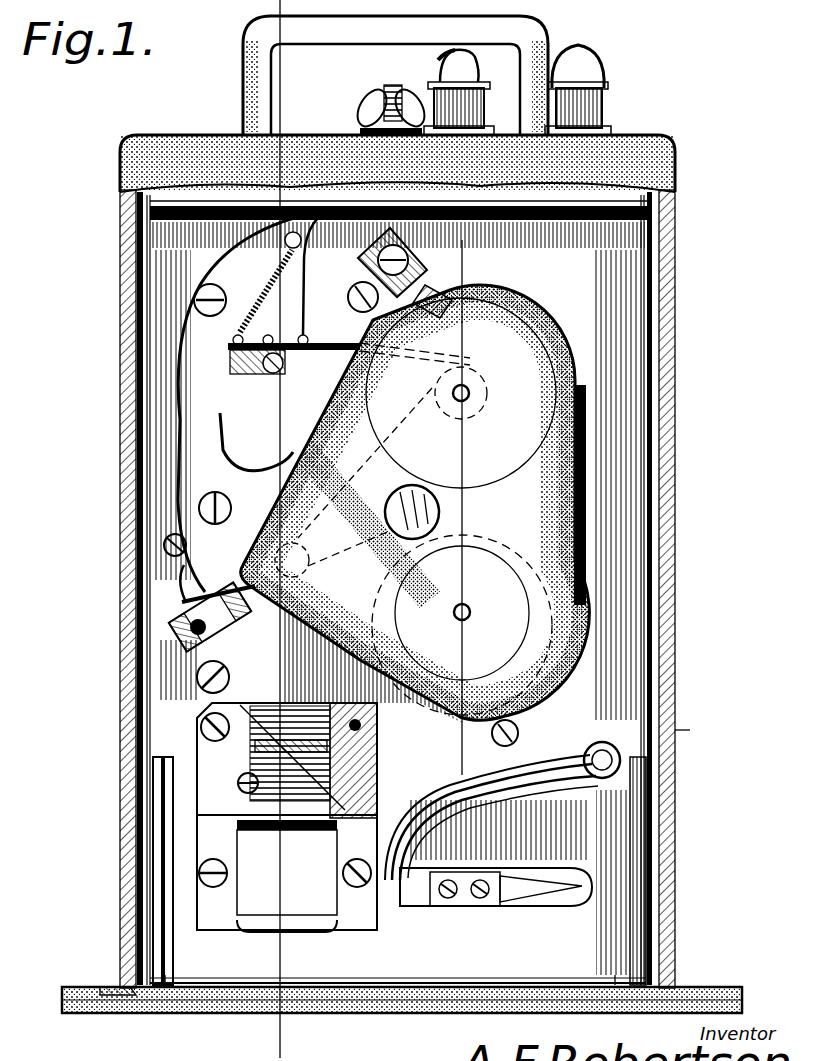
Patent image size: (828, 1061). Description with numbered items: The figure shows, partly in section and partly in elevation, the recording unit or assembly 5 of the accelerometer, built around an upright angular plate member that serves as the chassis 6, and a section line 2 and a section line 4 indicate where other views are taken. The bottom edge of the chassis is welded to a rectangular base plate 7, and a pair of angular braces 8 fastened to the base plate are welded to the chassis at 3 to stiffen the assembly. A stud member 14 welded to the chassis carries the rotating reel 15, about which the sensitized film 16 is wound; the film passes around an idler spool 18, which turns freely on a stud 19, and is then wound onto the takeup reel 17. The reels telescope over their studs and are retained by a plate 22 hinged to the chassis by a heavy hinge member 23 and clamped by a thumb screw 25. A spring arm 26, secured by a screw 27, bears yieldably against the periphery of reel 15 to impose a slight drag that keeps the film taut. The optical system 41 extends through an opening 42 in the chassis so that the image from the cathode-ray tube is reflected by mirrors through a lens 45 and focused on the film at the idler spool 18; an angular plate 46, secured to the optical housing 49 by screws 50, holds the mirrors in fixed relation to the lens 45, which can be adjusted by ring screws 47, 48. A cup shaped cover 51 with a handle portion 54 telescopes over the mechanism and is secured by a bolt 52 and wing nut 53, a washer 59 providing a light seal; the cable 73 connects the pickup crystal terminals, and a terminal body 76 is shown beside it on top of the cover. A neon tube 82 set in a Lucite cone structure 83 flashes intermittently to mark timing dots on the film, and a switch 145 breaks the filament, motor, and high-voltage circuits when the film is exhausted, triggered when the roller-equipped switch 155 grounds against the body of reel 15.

The section line 2- 2 is at (326, 12).
The welded connection 3 is at (616, 770).
The screws 4 is at (512, 248).
The recording unit or assembly 5 is at (680, 408).
The upright angular plate member (chassis) 6 is at (570, 276).
The base plate 7 is at (723, 988).
The angular braces 8 is at (150, 960).
The stud member 14 is at (472, 394).
The reel 15 is at (520, 462).
The sensitized film 16 is at (330, 572).
The takeup reel 17 is at (375, 612).
The idler spool 18 is at (302, 548).
The stud 19 is at (472, 612).
The plate 22 is at (506, 516).
The hinge member 23 is at (584, 600).
The thumb screw 25 is at (408, 485).
The spring arm 26 is at (445, 283).
The screw 27 is at (400, 236).
The optical system 41 is at (194, 742).
The opening 42 is at (300, 928).
The lens 45 is at (278, 735).
The angular plate 46 is at (326, 932).
The ring screw 47 is at (320, 714).
The ring screw 48 is at (377, 802).
The optical housing 49 is at (377, 748).
The screws 50 is at (240, 775).
The cup shaped cover 51 is at (690, 730).
The bolt 52 is at (368, 92).
The wing nut 53 is at (393, 85).
The handle portion 54 is at (243, 70).
The washer 59 is at (112, 988).
The cable 73 is at (472, 62).
The terminal body 76 is at (490, 92).
The neon tube 82 is at (235, 608).
The cone structure 83 is at (178, 610).
The switch 145 is at (582, 862).
The switch 155 is at (332, 346).